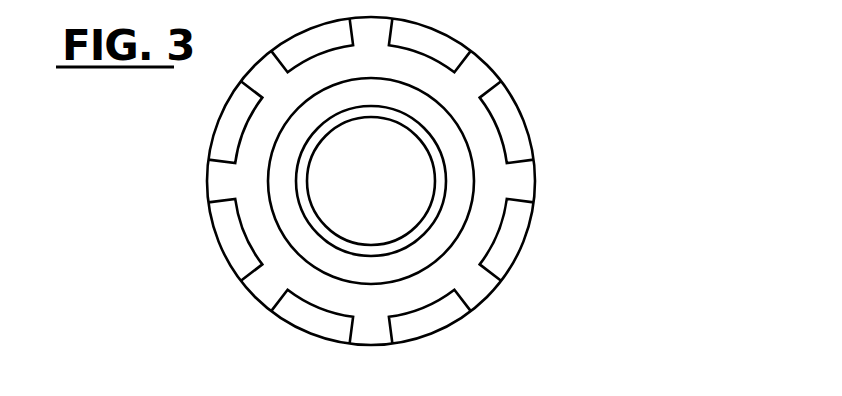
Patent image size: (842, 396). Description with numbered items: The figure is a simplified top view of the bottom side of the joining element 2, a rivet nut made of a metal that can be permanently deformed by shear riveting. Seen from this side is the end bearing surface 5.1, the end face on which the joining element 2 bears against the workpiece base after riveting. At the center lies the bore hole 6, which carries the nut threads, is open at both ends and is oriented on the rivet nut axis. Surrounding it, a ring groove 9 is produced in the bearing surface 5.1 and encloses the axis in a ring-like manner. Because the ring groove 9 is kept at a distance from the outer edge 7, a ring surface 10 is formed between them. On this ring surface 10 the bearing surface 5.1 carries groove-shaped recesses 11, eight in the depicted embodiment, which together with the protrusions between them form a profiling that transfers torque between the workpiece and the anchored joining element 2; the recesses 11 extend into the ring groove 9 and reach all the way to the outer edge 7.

The joining element 2 is at (560, 116).
The end bearing surface 5.1 is at (527, 180).
The bore hole 6 is at (462, 138).
The outer edge 7 is at (544, 253).
The ring groove 9 is at (473, 239).
The ring surface 10 is at (479, 333).
The groove-shaped recesses 11 is at (366, 343).